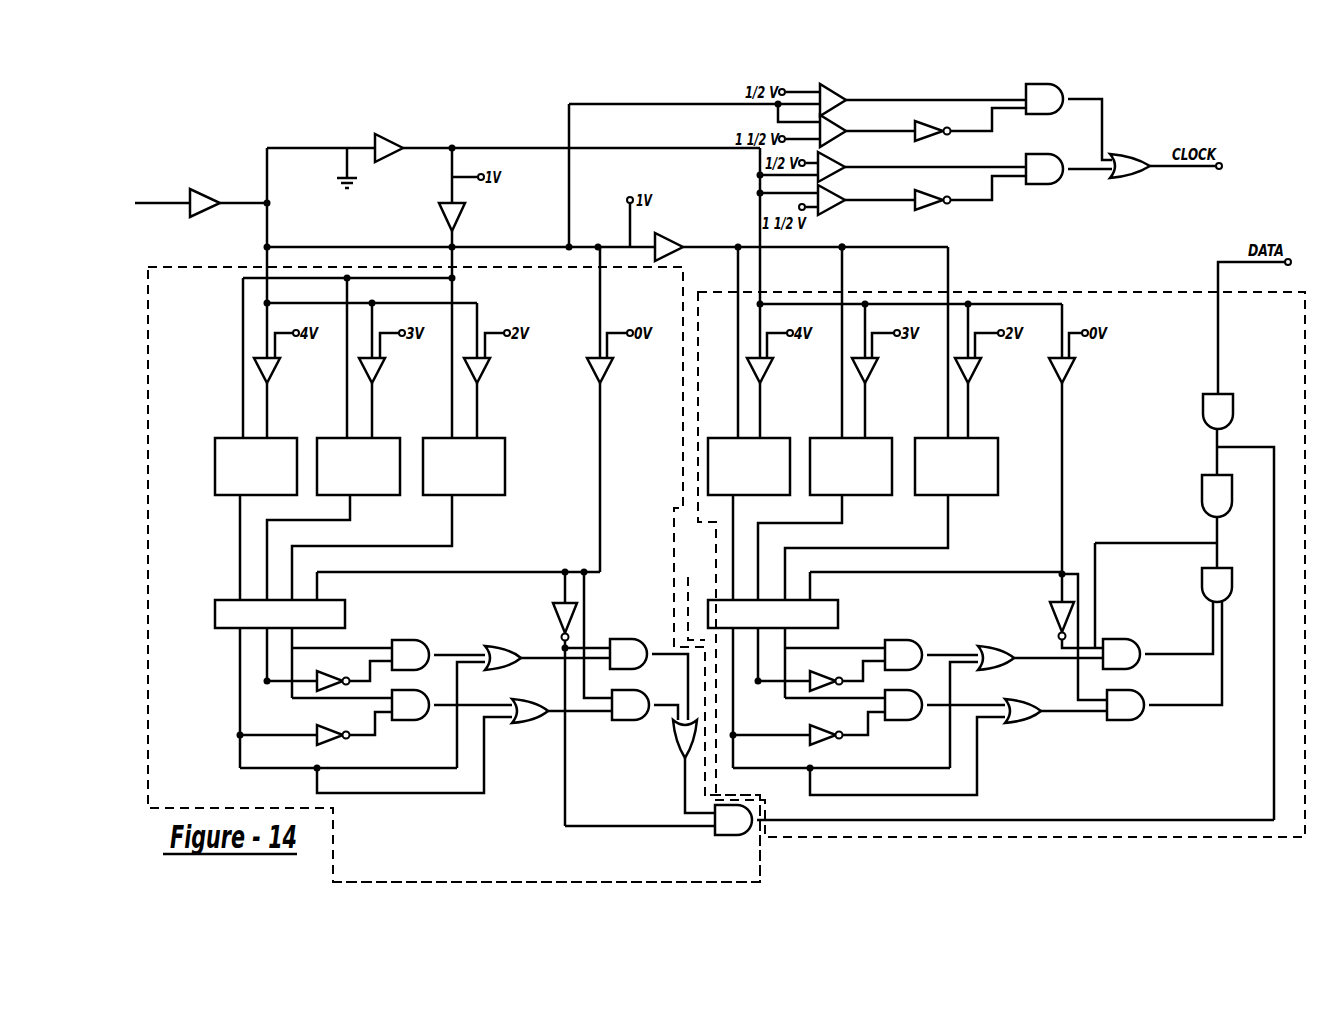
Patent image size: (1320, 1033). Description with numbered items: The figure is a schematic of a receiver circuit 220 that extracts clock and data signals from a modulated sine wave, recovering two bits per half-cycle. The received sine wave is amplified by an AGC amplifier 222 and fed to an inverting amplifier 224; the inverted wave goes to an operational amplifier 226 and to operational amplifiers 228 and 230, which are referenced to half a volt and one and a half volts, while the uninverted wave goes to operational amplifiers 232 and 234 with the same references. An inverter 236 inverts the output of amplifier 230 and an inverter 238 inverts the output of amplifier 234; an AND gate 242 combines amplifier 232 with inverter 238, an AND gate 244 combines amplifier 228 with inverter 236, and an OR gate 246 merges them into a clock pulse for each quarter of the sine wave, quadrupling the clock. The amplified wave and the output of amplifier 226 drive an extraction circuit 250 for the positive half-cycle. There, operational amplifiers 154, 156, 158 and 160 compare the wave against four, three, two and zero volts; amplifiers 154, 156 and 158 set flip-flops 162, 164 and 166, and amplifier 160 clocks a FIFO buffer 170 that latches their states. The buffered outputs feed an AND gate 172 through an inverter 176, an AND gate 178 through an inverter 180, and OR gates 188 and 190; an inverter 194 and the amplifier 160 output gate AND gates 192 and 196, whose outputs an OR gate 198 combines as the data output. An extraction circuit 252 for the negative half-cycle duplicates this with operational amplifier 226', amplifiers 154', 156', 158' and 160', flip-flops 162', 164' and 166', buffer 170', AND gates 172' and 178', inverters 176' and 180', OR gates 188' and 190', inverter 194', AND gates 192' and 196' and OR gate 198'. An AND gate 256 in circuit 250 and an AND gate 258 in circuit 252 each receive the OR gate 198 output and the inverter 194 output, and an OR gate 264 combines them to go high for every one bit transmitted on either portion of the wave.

The receiver circuit 220 is at (294, 96).
The AGC amplifier 222 is at (218, 200).
The inverting amplifier 224 is at (386, 144).
The operational amplifier 226 is at (483, 221).
The operational amplifier 226' is at (690, 229).
The operational amplifier 228 is at (858, 190).
The operational amplifier 230 is at (838, 212).
The operational amplifier 232 is at (836, 86).
The operational amplifier 234 is at (840, 113).
The inverter 236 is at (938, 212).
The inverter 238 is at (933, 111).
The AND gate 242 is at (1042, 84).
The AND gate 244 is at (1050, 183).
The OR gate 246 is at (1150, 150).
The extraction circuit 250 is at (650, 884).
The extraction circuit 252 is at (885, 838).
The AND gate 256 is at (735, 835).
The AND gate 258 is at (1200, 489).
The OR gate 264 is at (1234, 411).
The operational amplifier 154 is at (291, 376).
The operational amplifier 156 is at (396, 380).
The operational amplifier 158 is at (501, 380).
The operational amplifier 160 is at (633, 375).
The flip-flop 162 is at (230, 466).
The flip-flop 164 is at (371, 487).
The flip-flop 166 is at (493, 482).
The FIFO buffer 170 is at (248, 595).
The AND gate 172 is at (429, 630).
The inverter 176 is at (363, 640).
The AND gate 178 is at (417, 763).
The inverter 180 is at (262, 757).
The OR gate 188 is at (502, 630).
The OR gate 190 is at (528, 736).
The AND gate 192 is at (655, 628).
The inverter 194 is at (605, 604).
The AND gate 196 is at (626, 731).
The OR gate 198 is at (641, 797).
The operational amplifier 154' is at (785, 377).
The operational amplifier 156' is at (890, 380).
The operational amplifier 158' is at (993, 380).
The operational amplifier 160' is at (1091, 383).
The flip-flop 162' is at (718, 466).
The flip-flop 164' is at (868, 492).
The flip-flop 166' is at (982, 497).
The FIFO buffer 170' is at (755, 582).
The AND gate 172' is at (929, 628).
The inverter 176' is at (853, 645).
The AND gate 178' is at (910, 730).
The inverter 180' is at (804, 766).
The OR gate 188' is at (1003, 728).
The OR gate 190' is at (1065, 732).
The AND gate 192' is at (1130, 638).
The inverter 194' is at (1038, 621).
The AND gate 196' is at (1165, 727).
The OR gate 198' is at (1187, 582).